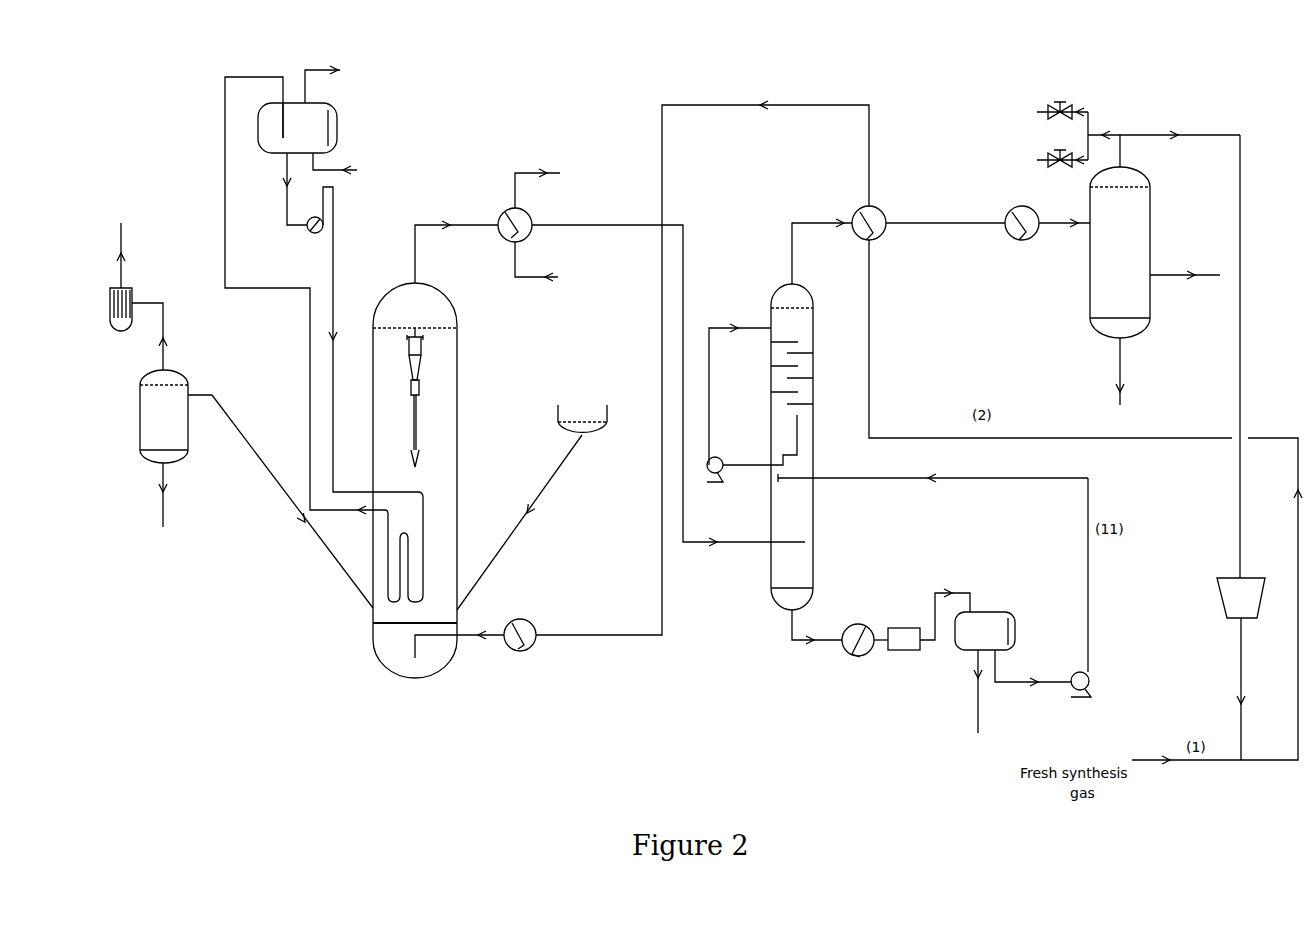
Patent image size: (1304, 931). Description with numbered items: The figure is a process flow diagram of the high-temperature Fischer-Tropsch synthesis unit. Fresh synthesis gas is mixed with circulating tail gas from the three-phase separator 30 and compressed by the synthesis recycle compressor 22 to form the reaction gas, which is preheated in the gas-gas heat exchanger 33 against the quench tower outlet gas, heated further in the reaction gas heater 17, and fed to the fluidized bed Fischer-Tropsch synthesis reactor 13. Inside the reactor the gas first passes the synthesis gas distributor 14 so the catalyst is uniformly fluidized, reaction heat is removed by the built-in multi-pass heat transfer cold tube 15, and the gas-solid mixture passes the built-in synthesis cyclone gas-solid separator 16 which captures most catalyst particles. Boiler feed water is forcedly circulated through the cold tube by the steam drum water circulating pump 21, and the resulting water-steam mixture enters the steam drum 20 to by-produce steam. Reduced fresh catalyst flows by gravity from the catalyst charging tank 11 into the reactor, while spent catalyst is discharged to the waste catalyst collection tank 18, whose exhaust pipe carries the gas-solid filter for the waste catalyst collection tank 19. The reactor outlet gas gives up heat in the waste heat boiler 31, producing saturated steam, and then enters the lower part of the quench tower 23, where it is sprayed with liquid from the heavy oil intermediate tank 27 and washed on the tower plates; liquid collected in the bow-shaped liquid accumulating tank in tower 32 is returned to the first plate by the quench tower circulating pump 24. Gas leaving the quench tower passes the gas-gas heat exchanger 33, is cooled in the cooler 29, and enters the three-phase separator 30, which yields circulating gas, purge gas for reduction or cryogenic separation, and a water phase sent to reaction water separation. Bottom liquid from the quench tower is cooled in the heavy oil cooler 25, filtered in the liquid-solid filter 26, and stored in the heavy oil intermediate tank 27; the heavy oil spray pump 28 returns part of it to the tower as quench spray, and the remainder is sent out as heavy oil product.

The gas-solid filter for the charging tank 11 is at (582, 422).
The fluidized bed Fischer-Tropsch synthesis reactor 13 is at (459, 478).
The synthesis gas distributor 14 is at (408, 625).
The heat transfer cold tube 15 is at (425, 548).
The synthesis cyclone gas-solid separator 16 is at (416, 382).
The reaction gas heater 17 is at (520, 653).
The waste catalyst collection tank 18 is at (180, 460).
The gas-solid filter for the waste catalyst collection tank 19 is at (110, 285).
The steam drum 20 is at (337, 143).
The steam drum water circulating pump 21 is at (309, 231).
The synthesis recycle compressor 22 is at (1217, 672).
The quench tower 23 is at (814, 552).
The quench tower circulating pump 24 is at (738, 528).
The heavy oil cooler 25 is at (828, 700).
The liquid-solid filter 26 is at (903, 628).
The heavy oil intermediate tank 27 is at (985, 612).
The heavy oil spray pump 28 is at (1087, 668).
The cooler 29 is at (1015, 238).
The three-phase separator 30 is at (1088, 255).
The waste heat boiler 31 is at (508, 212).
The liquid accumulating tank in tower 32 is at (780, 442).
The gas-gas heat exchanger 33 is at (860, 208).